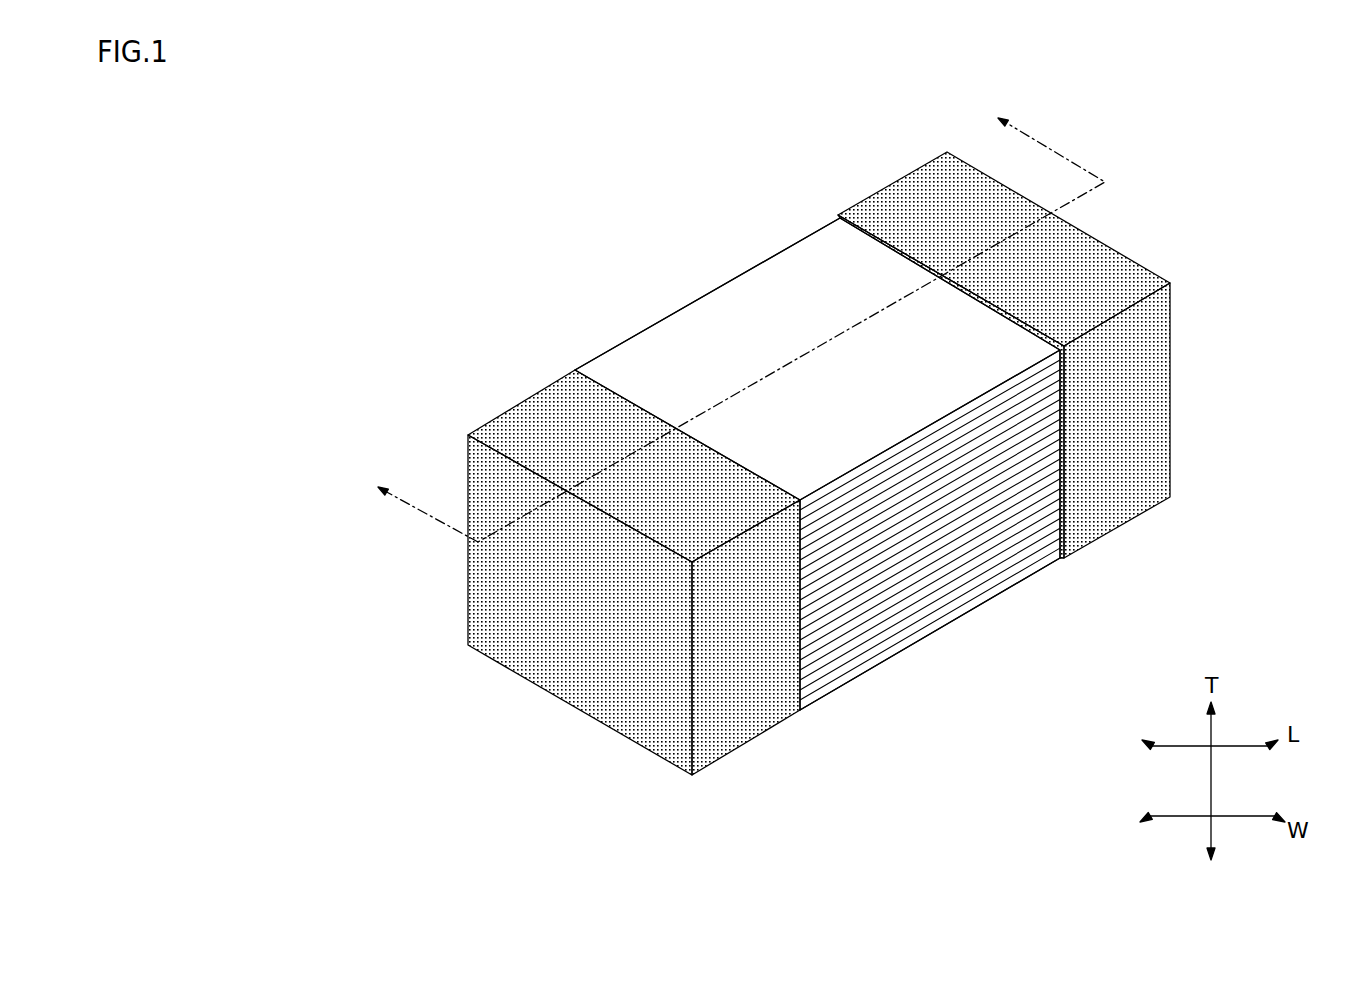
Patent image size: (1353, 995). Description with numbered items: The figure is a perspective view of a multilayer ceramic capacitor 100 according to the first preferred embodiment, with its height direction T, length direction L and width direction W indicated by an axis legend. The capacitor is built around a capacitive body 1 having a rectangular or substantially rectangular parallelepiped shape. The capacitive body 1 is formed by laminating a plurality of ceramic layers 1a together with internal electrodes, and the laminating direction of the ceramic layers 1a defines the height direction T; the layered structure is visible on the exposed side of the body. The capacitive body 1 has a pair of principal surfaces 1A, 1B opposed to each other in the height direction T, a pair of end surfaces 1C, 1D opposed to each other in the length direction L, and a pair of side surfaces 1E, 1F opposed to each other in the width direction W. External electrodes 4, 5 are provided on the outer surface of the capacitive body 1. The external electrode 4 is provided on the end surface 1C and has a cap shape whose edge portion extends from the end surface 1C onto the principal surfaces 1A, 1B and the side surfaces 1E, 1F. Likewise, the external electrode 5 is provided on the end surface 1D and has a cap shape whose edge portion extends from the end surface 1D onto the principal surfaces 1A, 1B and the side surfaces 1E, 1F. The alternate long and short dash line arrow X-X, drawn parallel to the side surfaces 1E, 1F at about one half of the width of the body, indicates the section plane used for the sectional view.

The multilayer ceramic capacitor 100 is at (256, 95).
The capacitive body 1 is at (836, 284).
The ceramic layers 1a is at (993, 551).
The principal surface 1A is at (855, 697).
The principal surface 1B is at (678, 380).
The end surface 1C is at (563, 582).
The end surface 1D is at (1108, 234).
The side surface 1E is at (937, 552).
The side surface 1F is at (705, 293).
The external electrode 4 is at (545, 428).
The external electrode 5 is at (965, 232).